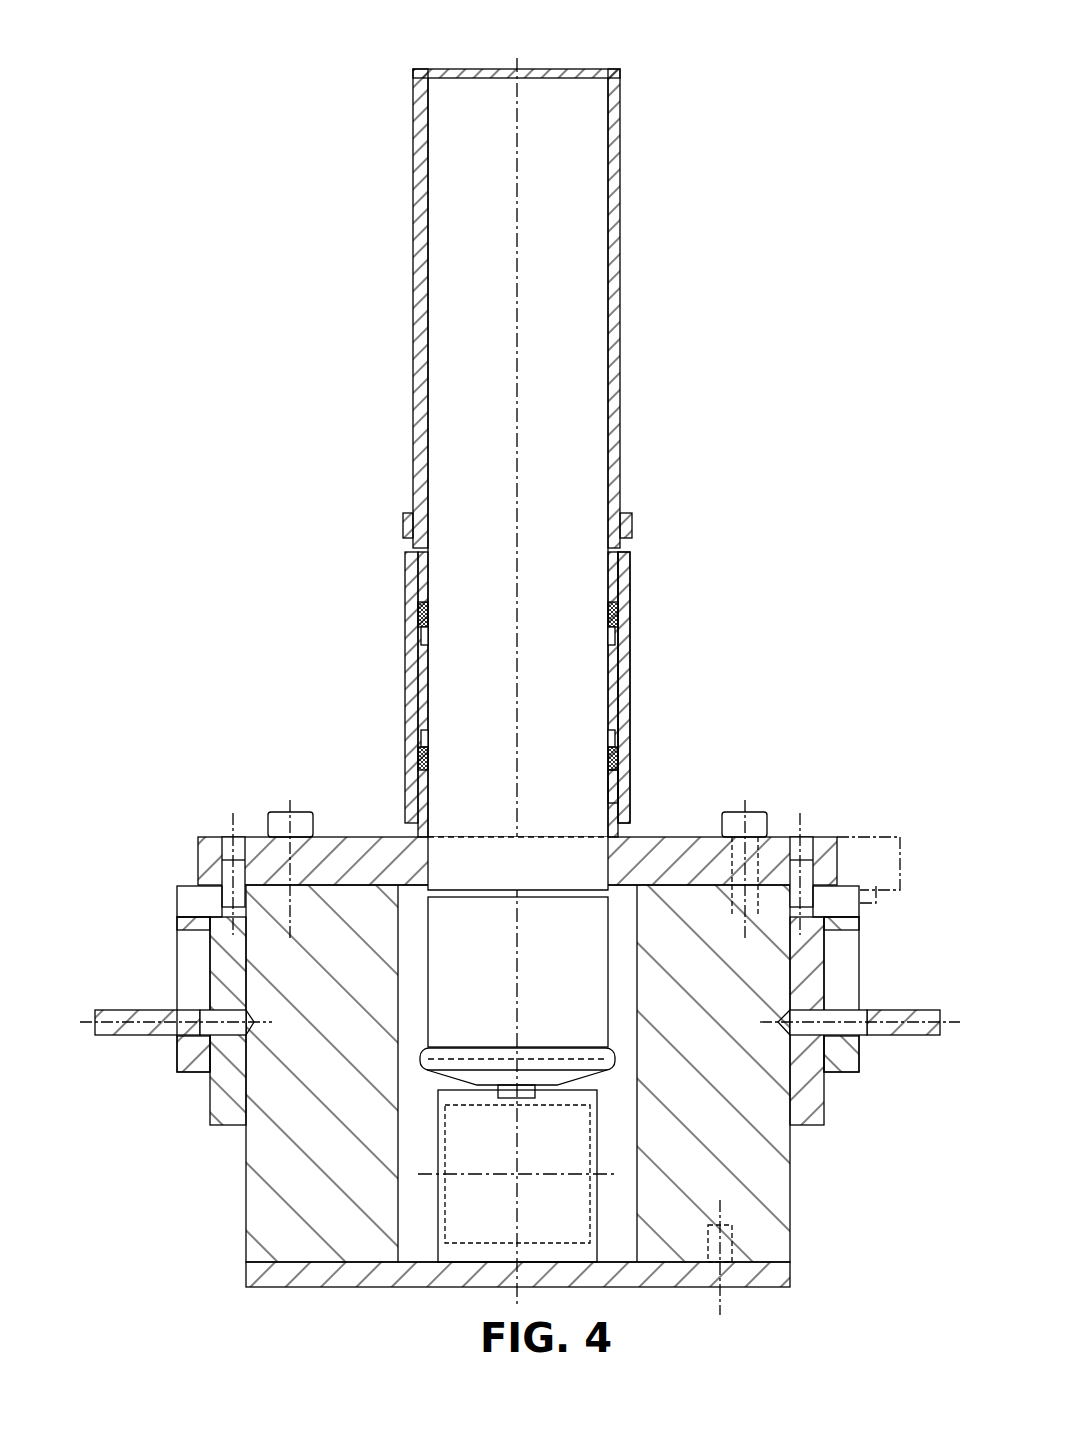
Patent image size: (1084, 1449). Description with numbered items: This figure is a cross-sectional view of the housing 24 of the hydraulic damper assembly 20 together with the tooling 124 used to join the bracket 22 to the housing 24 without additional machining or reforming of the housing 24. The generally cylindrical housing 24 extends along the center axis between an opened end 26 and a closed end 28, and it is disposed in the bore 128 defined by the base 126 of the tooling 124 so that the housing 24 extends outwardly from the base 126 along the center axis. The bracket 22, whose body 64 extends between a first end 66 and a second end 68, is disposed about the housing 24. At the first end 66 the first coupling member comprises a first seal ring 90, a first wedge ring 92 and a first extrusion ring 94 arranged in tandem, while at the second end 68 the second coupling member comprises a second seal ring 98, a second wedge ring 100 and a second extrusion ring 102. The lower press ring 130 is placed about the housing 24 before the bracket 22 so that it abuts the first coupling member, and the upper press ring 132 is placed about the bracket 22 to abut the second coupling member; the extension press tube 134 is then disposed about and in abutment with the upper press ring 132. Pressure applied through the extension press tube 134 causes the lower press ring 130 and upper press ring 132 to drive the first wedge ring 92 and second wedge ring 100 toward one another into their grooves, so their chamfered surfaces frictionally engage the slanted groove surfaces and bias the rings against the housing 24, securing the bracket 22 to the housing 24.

The hydraulic damper assembly 20 is at (414, 979).
The bracket 22 is at (637, 695).
The housing 24 is at (617, 1050).
The opened end 26 is at (552, 72).
The closed end 28 is at (560, 1090).
The body 64 is at (405, 718).
The first end 66 is at (625, 820).
The second end 68 is at (630, 556).
The first seal ring 90 is at (622, 750).
The first wedge ring 92 is at (620, 803).
The first extrusion ring 94 is at (620, 768).
The second seal ring 98 is at (418, 628).
The second wedge ring 100 is at (408, 565).
The second extrusion ring 102 is at (417, 607).
The tooling 124 is at (156, 910).
The base 126 is at (790, 1225).
The bore 128 is at (605, 858).
The lower press ring 130 is at (420, 835).
The upper press ring 132 is at (632, 528).
The extension press tube 134 is at (622, 328).